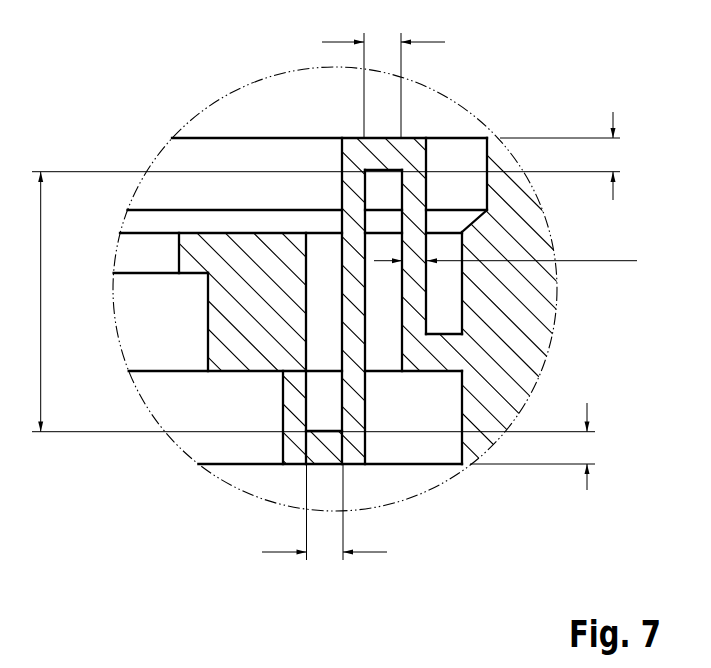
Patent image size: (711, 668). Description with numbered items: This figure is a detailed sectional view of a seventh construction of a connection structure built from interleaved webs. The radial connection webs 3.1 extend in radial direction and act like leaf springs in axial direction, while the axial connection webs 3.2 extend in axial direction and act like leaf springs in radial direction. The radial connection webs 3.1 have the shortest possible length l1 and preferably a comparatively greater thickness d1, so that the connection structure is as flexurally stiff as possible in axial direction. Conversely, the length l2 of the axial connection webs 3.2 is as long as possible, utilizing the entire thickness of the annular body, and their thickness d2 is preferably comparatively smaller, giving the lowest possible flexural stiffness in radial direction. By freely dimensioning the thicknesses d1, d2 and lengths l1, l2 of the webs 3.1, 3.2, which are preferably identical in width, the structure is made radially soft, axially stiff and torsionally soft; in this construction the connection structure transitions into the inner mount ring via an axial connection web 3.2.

The radial connection web 3.1 is at (383, 152).
The axial connection web 3.2 is at (417, 209).
The length of the radial connection webs l1 is at (353, 296).
The length of the axial connection webs l2 is at (319, 302).
The thickness of the radial connection webs d1 is at (549, 301).
The thickness of the axial connection webs d2 is at (519, 259).